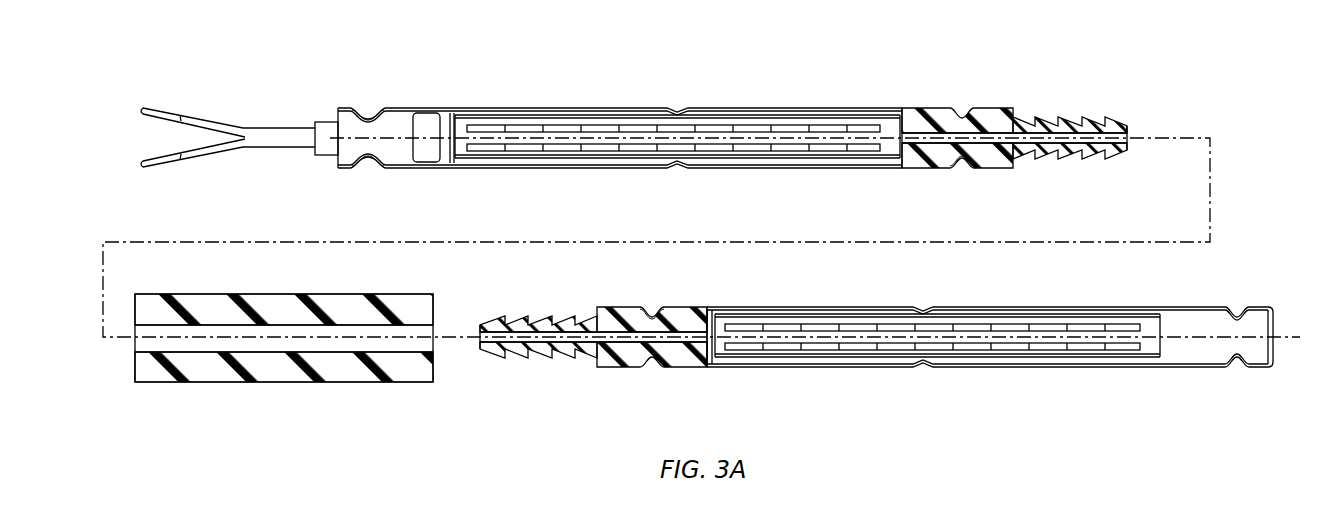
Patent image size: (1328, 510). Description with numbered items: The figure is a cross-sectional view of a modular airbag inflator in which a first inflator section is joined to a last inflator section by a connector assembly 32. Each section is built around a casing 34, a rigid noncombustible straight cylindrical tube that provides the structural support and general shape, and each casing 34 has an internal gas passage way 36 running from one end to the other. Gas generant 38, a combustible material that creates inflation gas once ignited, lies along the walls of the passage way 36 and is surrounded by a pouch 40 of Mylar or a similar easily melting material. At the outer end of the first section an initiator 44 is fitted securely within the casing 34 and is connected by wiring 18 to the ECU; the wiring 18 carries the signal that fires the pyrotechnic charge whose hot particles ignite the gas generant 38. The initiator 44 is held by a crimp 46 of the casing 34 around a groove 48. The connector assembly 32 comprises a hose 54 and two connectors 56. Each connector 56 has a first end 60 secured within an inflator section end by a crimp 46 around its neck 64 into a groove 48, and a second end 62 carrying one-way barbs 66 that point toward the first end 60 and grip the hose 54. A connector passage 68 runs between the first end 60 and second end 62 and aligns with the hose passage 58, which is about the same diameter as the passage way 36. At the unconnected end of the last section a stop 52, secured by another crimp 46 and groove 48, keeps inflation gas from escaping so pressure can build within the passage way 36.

The wiring 18 is at (212, 124).
The connector assembly 32 is at (279, 280).
The casing 34 is at (428, 108).
The internal gas passage way 36 is at (475, 158).
The gas generant 38 is at (555, 150).
The pouch 40 is at (428, 162).
The initiator 44 is at (343, 145).
The crimp 46 is at (370, 110).
The groove 48 is at (347, 115).
The stop 52 is at (1268, 355).
The hose 54 is at (310, 308).
The connector 56 is at (1010, 115).
The passage 58 is at (273, 345).
The first end 60 is at (907, 115).
The second end 62 is at (1130, 132).
The neck 64 is at (935, 150).
The barbs 66 is at (1108, 122).
The connector passage 68 is at (1098, 145).